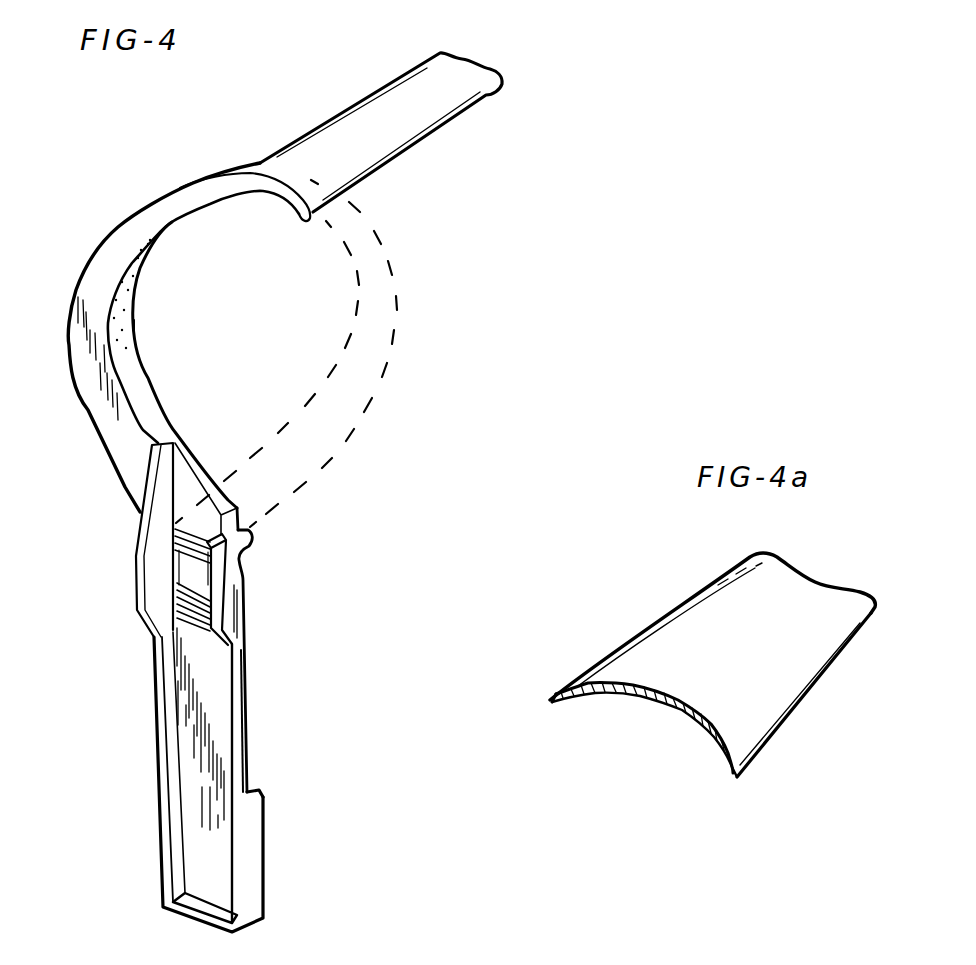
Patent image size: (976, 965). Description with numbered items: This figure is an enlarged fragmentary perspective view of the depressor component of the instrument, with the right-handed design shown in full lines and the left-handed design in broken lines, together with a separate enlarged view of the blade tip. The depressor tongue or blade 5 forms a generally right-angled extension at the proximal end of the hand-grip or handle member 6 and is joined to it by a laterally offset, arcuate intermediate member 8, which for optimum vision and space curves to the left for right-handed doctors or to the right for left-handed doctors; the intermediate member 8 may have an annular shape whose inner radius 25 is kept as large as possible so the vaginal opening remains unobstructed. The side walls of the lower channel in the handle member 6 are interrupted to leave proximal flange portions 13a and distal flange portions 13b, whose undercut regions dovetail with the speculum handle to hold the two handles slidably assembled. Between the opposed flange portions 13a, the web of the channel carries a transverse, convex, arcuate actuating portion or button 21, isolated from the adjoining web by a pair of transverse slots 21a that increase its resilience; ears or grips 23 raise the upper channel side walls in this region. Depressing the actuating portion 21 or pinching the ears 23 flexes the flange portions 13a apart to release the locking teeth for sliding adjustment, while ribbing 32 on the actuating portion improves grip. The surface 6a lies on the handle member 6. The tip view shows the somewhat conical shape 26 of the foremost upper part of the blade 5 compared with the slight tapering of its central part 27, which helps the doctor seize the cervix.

In FIG. 4, the depressor tongue or blade 5 is at (385, 128).
In FIG. 4, the intermediate member 8 is at (147, 218).
In FIG. 4, the inner radius 25 is at (114, 328).
In FIG. 4, the transverse slots 21a is at (243, 515).
In FIG. 4, the proximal side wall or flange portions 13a is at (252, 553).
In FIG. 4, the actuating portion or button 21 is at (182, 560).
In FIG. 4, the ears or grips 23 is at (137, 578).
In FIG. 4, the ribbing or serrations 32 is at (190, 612).
In FIG. 4, the handle surface 6a is at (210, 731).
In FIG. 4, the depressor hand-grip or handle member 6 is at (153, 814).
In FIG. 4, the distal side wall or flange portions 13b is at (250, 857).
In FIG. 4A, the central part 27 is at (820, 573).
In FIG. 4A, the conical shape 26 is at (860, 637).